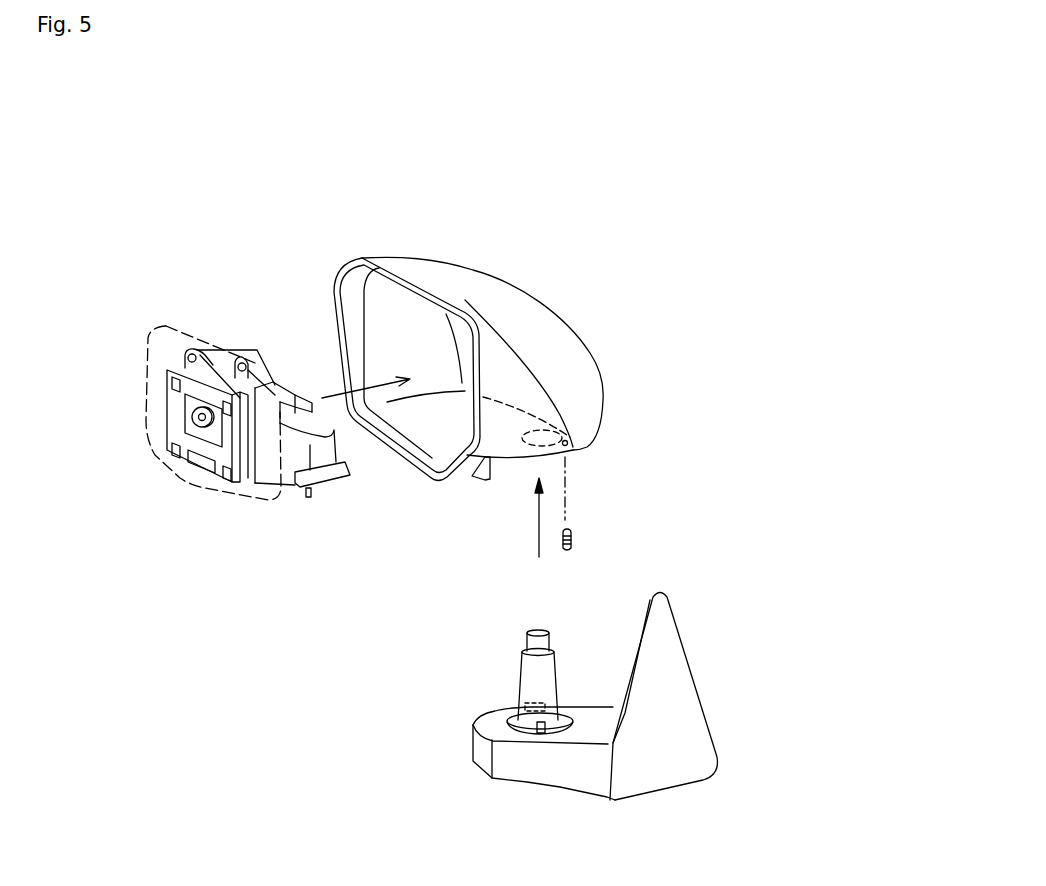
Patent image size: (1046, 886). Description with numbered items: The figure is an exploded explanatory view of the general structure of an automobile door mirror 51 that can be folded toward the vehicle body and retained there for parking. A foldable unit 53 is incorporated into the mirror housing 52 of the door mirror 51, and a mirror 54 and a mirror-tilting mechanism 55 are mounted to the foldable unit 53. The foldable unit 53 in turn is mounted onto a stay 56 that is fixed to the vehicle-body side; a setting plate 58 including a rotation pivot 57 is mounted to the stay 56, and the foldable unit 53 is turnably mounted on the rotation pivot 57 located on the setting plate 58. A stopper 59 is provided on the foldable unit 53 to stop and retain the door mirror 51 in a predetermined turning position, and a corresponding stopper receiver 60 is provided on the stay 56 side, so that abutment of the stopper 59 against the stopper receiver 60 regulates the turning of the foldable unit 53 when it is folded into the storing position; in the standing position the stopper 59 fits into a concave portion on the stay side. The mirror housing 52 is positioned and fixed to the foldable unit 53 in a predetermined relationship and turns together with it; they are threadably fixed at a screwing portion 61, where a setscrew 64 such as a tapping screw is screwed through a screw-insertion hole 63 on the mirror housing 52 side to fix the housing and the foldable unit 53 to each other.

The door mirror 51 is at (670, 324).
The mirror housing 52 is at (520, 310).
The foldable unit 53 is at (285, 487).
The mirror 54 is at (153, 430).
The mirror-tilting mechanism 55 is at (210, 367).
The stay 56 is at (483, 762).
The rotation pivot 57 is at (547, 668).
The setting plate 58 is at (510, 715).
The stopper 59 is at (309, 496).
The stopper receiver 60 is at (542, 734).
The screwing portion 61 is at (560, 455).
The screw-insertion hole 63 is at (572, 432).
The setscrew 64 is at (571, 538).